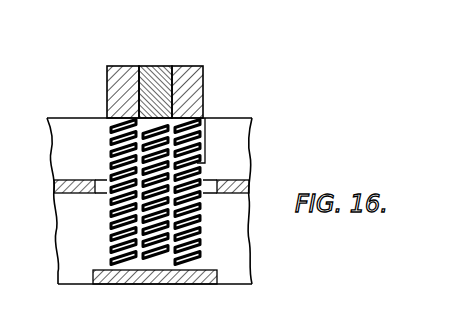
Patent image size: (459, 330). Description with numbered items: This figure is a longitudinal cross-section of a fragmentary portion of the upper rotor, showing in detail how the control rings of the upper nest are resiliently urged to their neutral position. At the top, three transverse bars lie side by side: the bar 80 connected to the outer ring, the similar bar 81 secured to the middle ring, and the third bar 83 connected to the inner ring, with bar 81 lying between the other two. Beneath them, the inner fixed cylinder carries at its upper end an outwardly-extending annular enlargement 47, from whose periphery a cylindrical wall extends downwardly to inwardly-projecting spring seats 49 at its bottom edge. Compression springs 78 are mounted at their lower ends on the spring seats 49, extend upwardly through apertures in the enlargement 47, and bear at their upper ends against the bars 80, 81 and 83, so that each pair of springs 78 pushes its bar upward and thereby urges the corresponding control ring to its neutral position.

The annular enlargement 47 is at (89, 159).
The spring seat 49 is at (96, 285).
The compression spring 78 is at (200, 225).
The bar 80 is at (120, 66).
The bar 81 is at (158, 66).
The third bar 83 is at (193, 66).